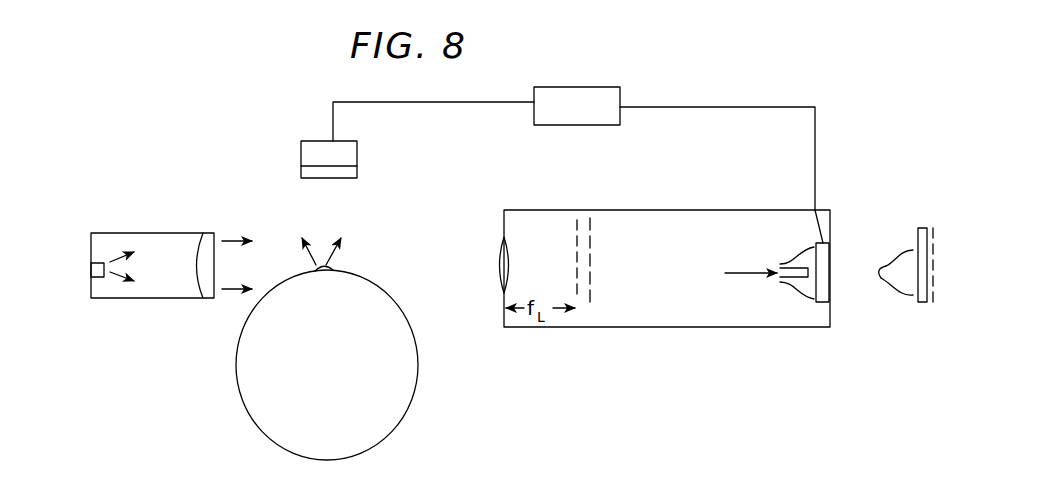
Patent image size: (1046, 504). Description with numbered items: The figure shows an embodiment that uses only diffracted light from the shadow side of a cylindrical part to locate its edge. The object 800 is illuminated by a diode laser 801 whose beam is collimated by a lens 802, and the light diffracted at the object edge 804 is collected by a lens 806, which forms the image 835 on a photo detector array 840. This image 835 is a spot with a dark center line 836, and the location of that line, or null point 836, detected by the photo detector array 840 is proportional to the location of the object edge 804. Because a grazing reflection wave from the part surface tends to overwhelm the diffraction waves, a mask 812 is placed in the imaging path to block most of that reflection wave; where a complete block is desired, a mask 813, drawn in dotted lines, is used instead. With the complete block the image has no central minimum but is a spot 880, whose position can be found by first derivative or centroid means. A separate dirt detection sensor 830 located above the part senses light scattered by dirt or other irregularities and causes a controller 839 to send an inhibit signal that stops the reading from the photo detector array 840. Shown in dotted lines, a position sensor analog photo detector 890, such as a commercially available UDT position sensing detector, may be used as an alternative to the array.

The object 800 is at (348, 361).
The diode laser 801 is at (92, 268).
The lens 802 is at (202, 238).
The object edge 804 is at (333, 268).
The lens 806 is at (497, 270).
The mask 812 is at (591, 226).
The mask 813 is at (577, 226).
The dirt detection sensor 830 is at (324, 140).
The image 835 is at (787, 283).
The dark center line 836 is at (752, 270).
The controller 839 is at (604, 117).
The photo detector array 840 is at (823, 258).
The spot 880 is at (881, 278).
The position sensor analog photo detector 890 is at (928, 232).